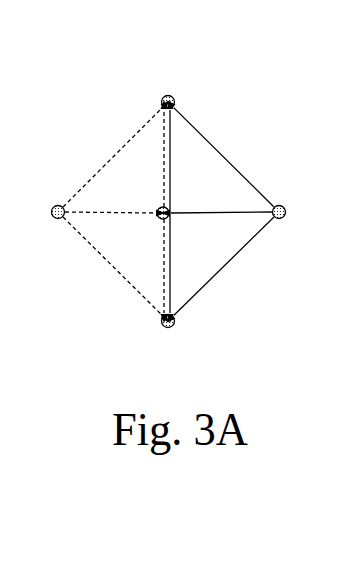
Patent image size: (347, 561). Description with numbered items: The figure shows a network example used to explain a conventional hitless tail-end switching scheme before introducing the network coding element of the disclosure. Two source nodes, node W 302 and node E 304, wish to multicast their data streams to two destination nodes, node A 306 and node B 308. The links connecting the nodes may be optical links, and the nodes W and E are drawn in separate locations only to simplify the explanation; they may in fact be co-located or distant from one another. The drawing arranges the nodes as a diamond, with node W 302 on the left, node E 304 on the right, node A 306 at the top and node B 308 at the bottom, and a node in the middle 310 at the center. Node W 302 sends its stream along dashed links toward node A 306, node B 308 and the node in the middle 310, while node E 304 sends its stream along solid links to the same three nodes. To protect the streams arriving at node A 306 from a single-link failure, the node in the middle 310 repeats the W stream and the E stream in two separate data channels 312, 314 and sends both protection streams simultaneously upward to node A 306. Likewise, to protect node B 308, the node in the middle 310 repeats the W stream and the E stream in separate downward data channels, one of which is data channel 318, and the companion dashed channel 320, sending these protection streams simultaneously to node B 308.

The node W 302 is at (56, 204).
The node E 304 is at (287, 205).
The node A 306 is at (177, 87).
The node B 308 is at (184, 320).
The node in the middle 310 is at (173, 210).
The data channel 312 is at (160, 160).
The data channel 314 is at (173, 170).
The data channel 318 is at (173, 274).
The dashed path from center to node B 320 is at (158, 259).